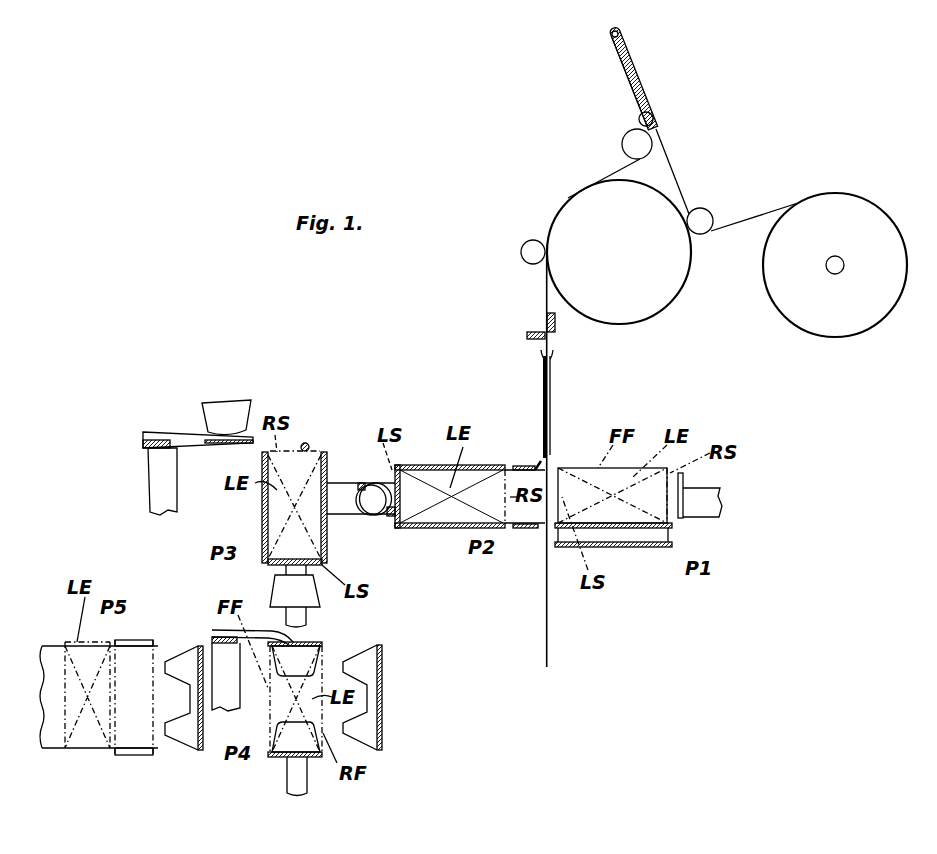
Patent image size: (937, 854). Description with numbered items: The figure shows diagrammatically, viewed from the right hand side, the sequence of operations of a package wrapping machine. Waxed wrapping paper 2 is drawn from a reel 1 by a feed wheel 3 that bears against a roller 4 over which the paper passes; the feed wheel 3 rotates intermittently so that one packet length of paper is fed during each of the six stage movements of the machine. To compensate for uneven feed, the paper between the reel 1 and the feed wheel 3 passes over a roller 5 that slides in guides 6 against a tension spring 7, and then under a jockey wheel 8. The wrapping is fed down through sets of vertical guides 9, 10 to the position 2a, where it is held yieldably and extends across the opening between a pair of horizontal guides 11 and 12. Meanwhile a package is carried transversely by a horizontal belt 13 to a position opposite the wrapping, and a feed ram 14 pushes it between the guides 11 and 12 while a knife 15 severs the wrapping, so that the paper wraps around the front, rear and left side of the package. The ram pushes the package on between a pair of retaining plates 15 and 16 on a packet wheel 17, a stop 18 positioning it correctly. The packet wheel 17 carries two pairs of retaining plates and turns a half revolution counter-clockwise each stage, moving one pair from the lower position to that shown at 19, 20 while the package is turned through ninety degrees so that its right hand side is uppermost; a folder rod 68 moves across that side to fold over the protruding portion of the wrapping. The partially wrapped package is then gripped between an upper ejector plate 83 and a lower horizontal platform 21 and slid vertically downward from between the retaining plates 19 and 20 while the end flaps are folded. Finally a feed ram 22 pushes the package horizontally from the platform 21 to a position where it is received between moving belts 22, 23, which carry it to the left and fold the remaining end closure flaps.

The reel 1 is at (867, 303).
The waxed wrapping paper 2 is at (738, 220).
The wrapping position 2a is at (548, 651).
The feed wheel 3 is at (521, 250).
The roller 4 is at (655, 270).
The roller 5 is at (651, 112).
The guides 6 is at (640, 89).
The tension spring 7 is at (645, 88).
The jockey wheel 8 is at (636, 138).
The vertical guides 9 is at (542, 404).
The vertical guides 10 is at (552, 416).
The horizontal guide 11 is at (520, 465).
The horizontal guide 12 is at (522, 529).
The horizontal belt 13 is at (640, 527).
The feed ram 14 is at (686, 488).
The knife 15 is at (527, 333).
The retaining plate 16 is at (447, 528).
The packet wheel 17 is at (375, 483).
The stop 18 is at (390, 512).
The retaining plate 19 is at (263, 505).
The retaining plate 20 is at (325, 457).
The lower horizontal platform 21 is at (278, 757).
The feed ram 22 is at (53, 645).
The moving belt 23 is at (155, 642).
The folder rod 68 is at (306, 443).
The upper ejector plate 83 is at (225, 445).